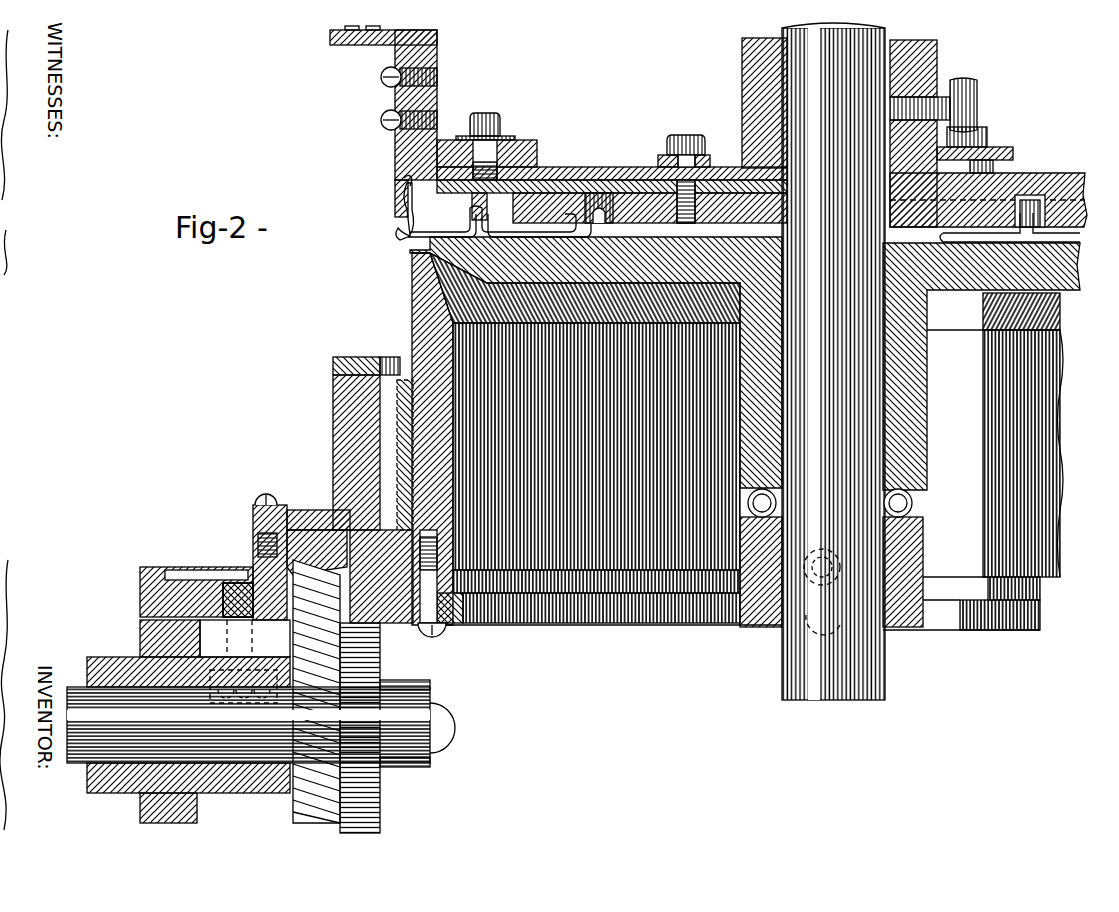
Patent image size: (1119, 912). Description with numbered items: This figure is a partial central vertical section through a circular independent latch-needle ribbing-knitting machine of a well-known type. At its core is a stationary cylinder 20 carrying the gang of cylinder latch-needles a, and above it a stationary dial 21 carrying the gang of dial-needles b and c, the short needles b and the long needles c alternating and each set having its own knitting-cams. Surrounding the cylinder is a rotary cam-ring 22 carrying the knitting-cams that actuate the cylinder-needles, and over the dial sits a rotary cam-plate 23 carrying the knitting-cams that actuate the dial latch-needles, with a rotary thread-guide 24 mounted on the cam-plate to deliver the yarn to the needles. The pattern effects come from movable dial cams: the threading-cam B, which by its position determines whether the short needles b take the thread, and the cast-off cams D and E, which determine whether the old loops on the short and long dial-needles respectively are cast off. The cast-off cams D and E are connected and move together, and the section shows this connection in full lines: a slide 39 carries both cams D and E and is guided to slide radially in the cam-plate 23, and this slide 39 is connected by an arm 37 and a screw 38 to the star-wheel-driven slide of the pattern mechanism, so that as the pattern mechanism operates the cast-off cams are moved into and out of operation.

The stationary cylinder 20 is at (415, 318).
The stationary dial 21 is at (970, 290).
The rotary cam-ring 22 is at (333, 420).
The rotary cam-plate 23 is at (1018, 175).
The rotary thread-guide 24 is at (395, 160).
The arm 37 is at (660, 158).
The screw 38 is at (683, 134).
The slide 39 is at (580, 190).
The cylinder latch-needles a is at (410, 243).
The short dial-needles b is at (395, 233).
The threading-cam B is at (472, 205).
The long dial-needles c is at (1082, 238).
The cast-off cam D is at (533, 192).
The cast-off cam E is at (710, 185).